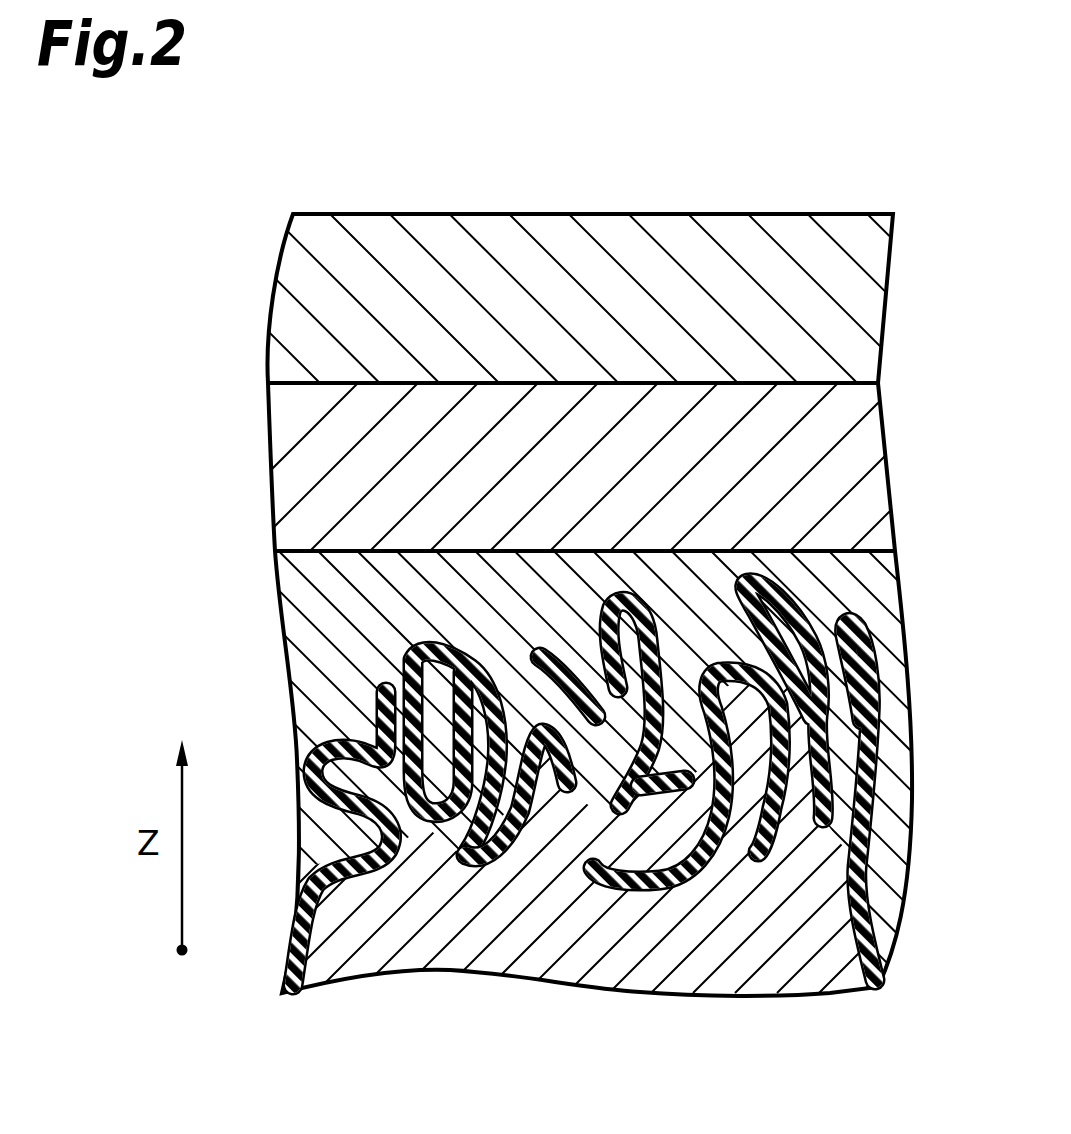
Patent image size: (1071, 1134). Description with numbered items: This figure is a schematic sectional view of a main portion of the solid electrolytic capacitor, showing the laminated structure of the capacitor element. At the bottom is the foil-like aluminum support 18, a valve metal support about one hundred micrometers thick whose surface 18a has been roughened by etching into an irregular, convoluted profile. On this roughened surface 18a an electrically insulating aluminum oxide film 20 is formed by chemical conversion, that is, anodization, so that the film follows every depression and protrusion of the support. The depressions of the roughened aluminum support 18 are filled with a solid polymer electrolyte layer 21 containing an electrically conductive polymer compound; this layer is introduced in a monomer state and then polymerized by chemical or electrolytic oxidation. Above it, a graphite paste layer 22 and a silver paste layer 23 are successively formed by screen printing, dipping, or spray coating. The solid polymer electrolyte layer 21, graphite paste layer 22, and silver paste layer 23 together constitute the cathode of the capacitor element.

The aluminum support 18 is at (432, 895).
The surface of the aluminum support 18a is at (610, 893).
The aluminum oxide film 20 is at (777, 883).
The solid polymer electrolyte layer 21 is at (330, 635).
The graphite paste layer 22 is at (295, 487).
The silver paste layer 23 is at (308, 318).